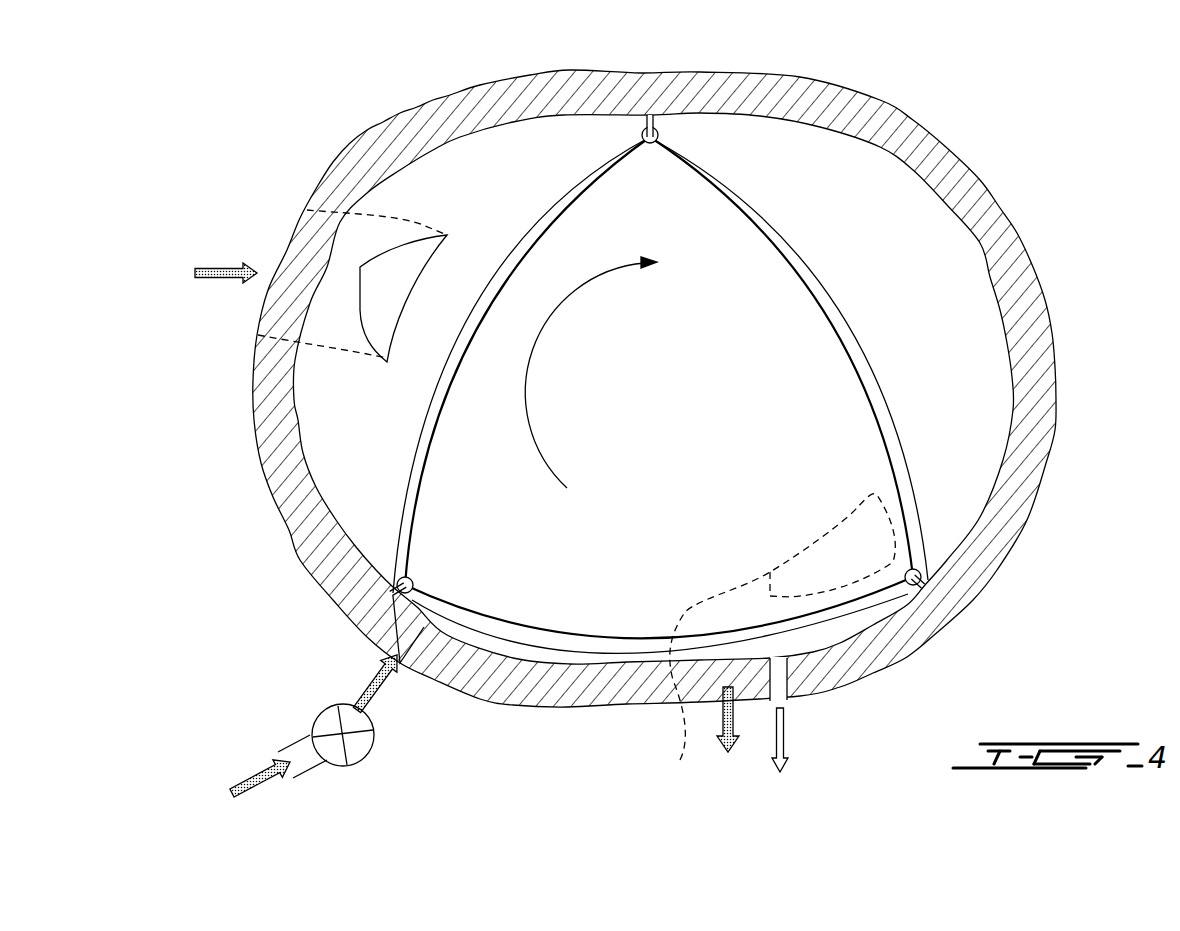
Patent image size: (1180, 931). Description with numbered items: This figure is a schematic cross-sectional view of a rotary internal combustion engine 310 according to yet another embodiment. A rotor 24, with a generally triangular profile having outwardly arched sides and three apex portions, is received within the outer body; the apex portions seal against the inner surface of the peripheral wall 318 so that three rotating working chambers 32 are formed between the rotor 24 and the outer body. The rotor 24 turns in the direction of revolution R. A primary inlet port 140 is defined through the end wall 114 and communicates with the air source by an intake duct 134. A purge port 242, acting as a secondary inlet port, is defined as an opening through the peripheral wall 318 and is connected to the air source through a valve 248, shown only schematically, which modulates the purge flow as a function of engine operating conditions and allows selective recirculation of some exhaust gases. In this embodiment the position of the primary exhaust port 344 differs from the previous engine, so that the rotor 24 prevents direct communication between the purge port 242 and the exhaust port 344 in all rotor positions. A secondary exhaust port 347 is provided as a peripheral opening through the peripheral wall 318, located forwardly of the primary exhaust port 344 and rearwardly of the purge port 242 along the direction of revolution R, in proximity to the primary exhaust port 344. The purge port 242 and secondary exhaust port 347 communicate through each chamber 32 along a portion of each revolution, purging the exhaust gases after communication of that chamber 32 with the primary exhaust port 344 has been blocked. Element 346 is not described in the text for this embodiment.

The engine 310 is at (287, 138).
The rotor 24 is at (743, 182).
The working chambers 32 is at (496, 199).
The end wall 114 is at (937, 267).
The peripheral wall 318 is at (1030, 353).
The intake duct 134 is at (310, 252).
The primary inlet port 140 is at (378, 293).
The purge port 242 is at (403, 635).
The valve 248 is at (360, 750).
The primary exhaust port 344 is at (873, 552).
The sealing flap 346 is at (776, 645).
The secondary exhaust port 347 is at (778, 678).
The direction of revolution R is at (541, 328).